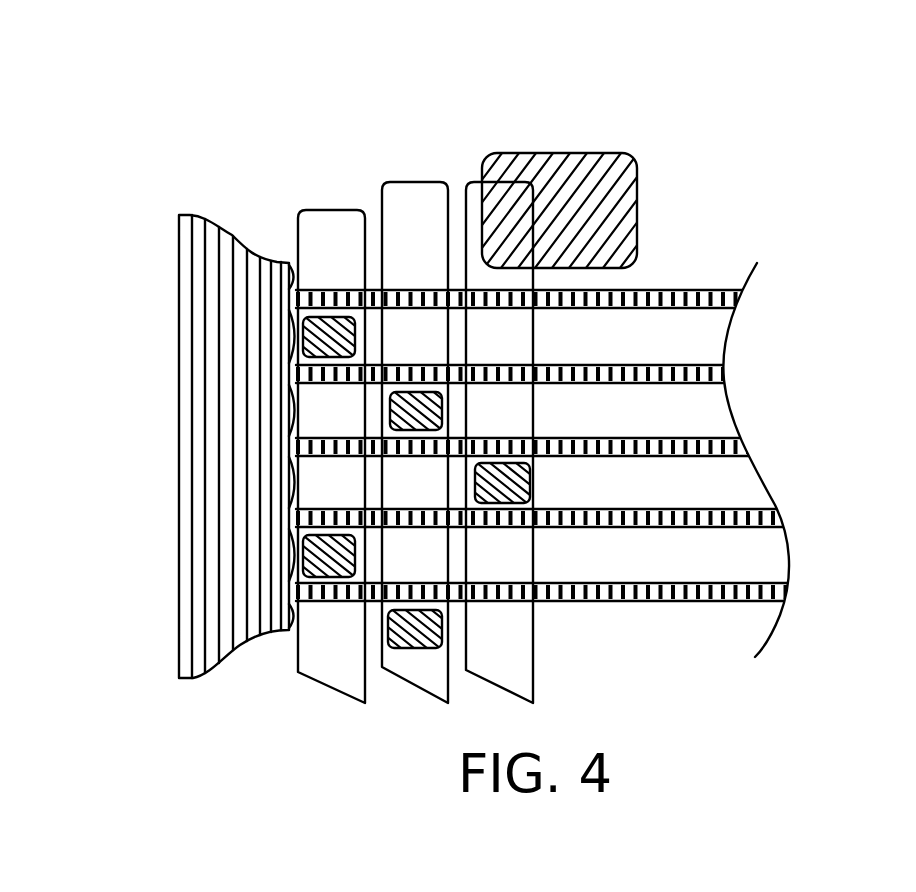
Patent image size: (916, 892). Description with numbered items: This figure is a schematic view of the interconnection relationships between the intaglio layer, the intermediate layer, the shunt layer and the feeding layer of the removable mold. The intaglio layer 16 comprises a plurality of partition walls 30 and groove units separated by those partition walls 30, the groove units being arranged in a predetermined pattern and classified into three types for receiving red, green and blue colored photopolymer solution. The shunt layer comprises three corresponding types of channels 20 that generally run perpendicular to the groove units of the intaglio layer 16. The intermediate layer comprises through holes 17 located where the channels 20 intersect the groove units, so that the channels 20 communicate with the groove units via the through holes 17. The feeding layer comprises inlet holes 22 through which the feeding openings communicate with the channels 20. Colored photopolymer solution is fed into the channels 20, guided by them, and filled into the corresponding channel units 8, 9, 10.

The channel unit 8 is at (713, 323).
The channel unit 9 is at (687, 423).
The channel unit 10 is at (717, 492).
The intaglio layer 16 is at (217, 435).
The through holes 17 is at (355, 335).
The channels 20 is at (466, 182).
The inlet holes 22 is at (637, 203).
The partition walls 30 is at (797, 398).